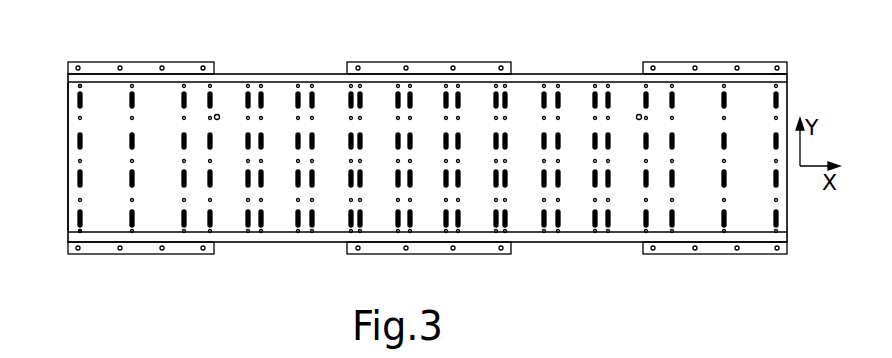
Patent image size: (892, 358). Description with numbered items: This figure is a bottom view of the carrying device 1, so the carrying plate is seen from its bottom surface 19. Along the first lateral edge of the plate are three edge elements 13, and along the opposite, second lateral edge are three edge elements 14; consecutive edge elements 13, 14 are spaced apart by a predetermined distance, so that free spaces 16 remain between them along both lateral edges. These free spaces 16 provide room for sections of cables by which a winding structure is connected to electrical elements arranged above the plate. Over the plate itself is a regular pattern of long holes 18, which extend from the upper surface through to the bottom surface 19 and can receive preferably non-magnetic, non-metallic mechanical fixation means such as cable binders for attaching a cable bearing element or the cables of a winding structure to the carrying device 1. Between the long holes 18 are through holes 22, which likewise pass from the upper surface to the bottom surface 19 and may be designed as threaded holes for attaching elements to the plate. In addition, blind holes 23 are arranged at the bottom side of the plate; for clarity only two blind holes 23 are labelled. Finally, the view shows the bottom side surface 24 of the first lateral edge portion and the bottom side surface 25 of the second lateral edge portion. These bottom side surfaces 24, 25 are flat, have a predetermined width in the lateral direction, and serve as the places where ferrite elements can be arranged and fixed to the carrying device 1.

The carrying device 1 is at (66, 273).
The edge elements 13 is at (102, 70).
The edge elements 14 is at (178, 247).
The free spaces 16 is at (245, 70).
The long holes 18 is at (78, 102).
The bottom surface 19 is at (277, 102).
The through holes 22 is at (78, 163).
The blind holes 23 is at (78, 87).
The bottom side surface 24 is at (777, 82).
The bottom side surface 25 is at (782, 238).